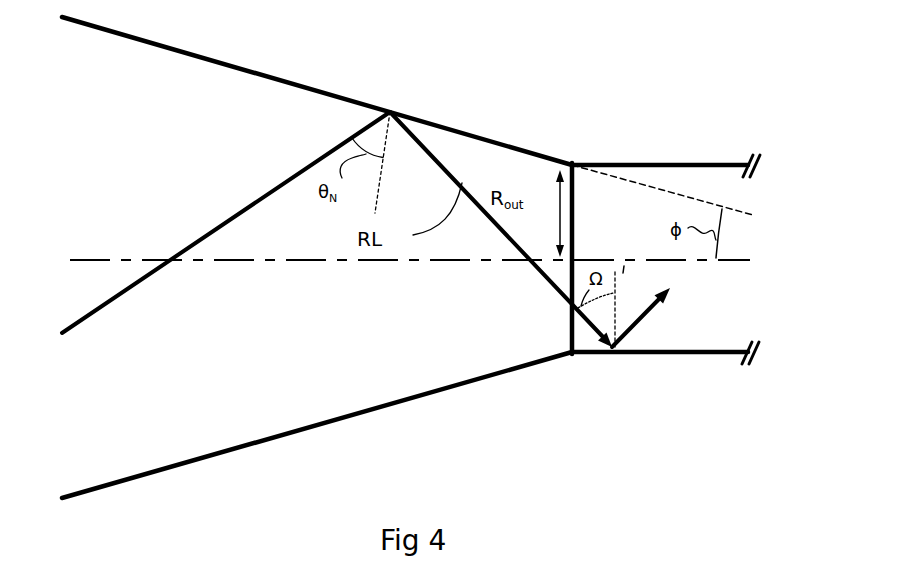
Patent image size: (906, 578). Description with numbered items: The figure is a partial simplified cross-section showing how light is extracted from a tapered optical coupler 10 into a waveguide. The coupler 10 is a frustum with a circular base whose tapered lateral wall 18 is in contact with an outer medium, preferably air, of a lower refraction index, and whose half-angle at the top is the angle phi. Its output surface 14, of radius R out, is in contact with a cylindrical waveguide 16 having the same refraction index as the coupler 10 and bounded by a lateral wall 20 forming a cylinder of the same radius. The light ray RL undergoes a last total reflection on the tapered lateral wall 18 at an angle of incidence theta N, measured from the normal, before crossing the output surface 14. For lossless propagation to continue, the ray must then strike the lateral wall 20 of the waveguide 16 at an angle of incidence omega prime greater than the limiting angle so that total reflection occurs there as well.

The tapered optical coupler 10 is at (443, 76).
The output surface 14 is at (570, 330).
The cylindrical waveguide 16 is at (685, 186).
The tapered lateral wall 18 is at (298, 435).
The lateral wall of the waveguide 20 is at (668, 165).